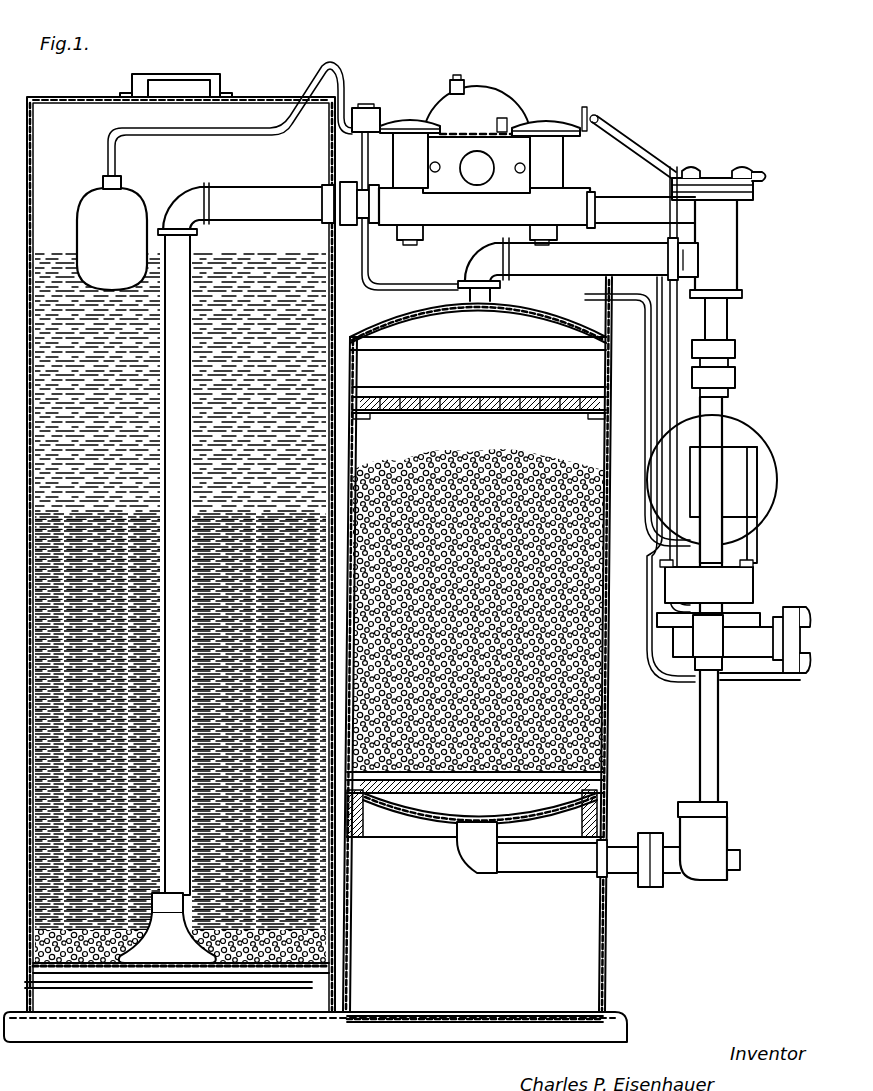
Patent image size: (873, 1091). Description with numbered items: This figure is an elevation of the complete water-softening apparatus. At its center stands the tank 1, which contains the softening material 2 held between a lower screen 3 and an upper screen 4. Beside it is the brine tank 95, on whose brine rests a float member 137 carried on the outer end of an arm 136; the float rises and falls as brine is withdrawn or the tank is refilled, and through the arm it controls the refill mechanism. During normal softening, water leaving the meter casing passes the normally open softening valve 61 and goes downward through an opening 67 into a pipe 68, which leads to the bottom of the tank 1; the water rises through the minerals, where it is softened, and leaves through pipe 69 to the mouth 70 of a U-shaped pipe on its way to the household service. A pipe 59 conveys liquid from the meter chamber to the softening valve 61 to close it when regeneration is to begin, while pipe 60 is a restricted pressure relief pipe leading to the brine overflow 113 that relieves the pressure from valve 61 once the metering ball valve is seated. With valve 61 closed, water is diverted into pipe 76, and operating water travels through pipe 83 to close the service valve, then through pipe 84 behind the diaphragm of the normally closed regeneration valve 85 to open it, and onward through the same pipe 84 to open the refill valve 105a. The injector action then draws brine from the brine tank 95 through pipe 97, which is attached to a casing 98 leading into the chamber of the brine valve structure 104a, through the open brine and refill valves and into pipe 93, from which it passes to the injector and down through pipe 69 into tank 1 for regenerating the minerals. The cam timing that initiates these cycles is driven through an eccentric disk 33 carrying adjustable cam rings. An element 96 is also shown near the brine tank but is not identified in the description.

The tank 1 is at (405, 985).
The softening material 2 is at (604, 730).
The lower screen 3 is at (432, 795).
The upper screen 4 is at (512, 412).
The eccentric disk 33 is at (758, 480).
The pipe 59 is at (652, 582).
The pressure relief pipe 60 is at (405, 290).
The softening valve 61 is at (760, 645).
The opening 67 is at (700, 662).
The pipe 68 is at (706, 759).
The pipe 69 is at (646, 232).
The mouth of U-shaped pipe 70 is at (692, 266).
The pipe 76 is at (718, 435).
The pipe 83 is at (673, 338).
The pipe 84 is at (636, 133).
The regeneration valve 85 is at (737, 224).
The pipe 93 is at (622, 202).
The brine tank 95 is at (100, 108).
The outlet pipe 96 is at (190, 306).
The pipe 97 is at (305, 214).
The casing 98 is at (395, 220).
The brine valve 104a is at (410, 120).
The refill valve 105a is at (552, 122).
The brine overflow 113 is at (334, 125).
The arm 136 is at (272, 132).
The float member 137 is at (86, 205).